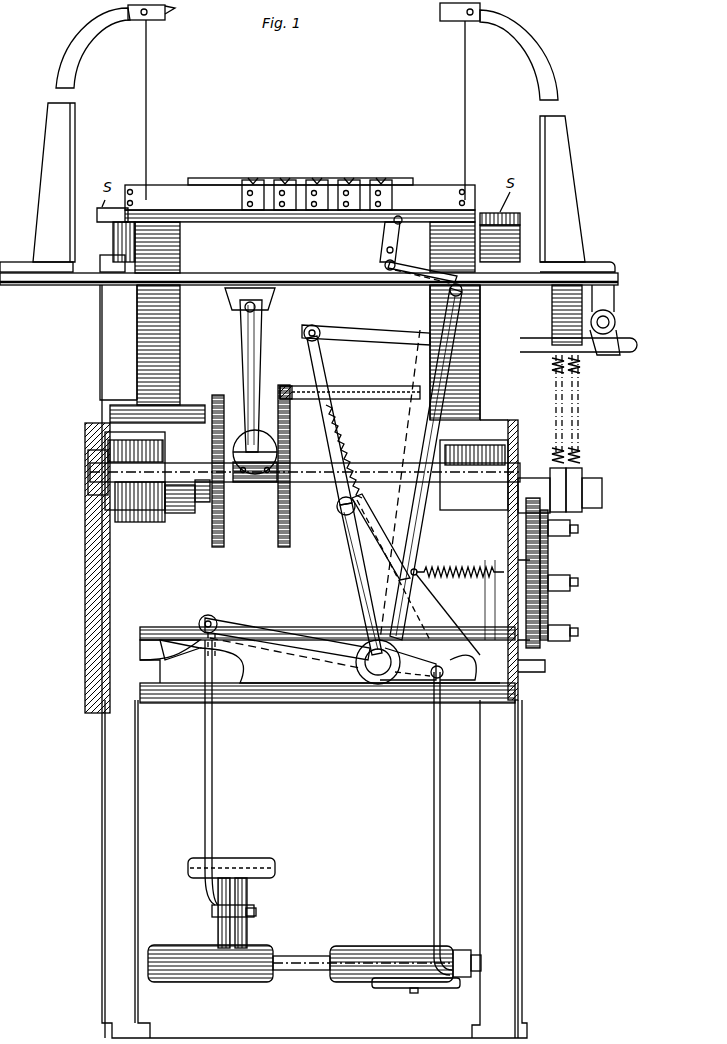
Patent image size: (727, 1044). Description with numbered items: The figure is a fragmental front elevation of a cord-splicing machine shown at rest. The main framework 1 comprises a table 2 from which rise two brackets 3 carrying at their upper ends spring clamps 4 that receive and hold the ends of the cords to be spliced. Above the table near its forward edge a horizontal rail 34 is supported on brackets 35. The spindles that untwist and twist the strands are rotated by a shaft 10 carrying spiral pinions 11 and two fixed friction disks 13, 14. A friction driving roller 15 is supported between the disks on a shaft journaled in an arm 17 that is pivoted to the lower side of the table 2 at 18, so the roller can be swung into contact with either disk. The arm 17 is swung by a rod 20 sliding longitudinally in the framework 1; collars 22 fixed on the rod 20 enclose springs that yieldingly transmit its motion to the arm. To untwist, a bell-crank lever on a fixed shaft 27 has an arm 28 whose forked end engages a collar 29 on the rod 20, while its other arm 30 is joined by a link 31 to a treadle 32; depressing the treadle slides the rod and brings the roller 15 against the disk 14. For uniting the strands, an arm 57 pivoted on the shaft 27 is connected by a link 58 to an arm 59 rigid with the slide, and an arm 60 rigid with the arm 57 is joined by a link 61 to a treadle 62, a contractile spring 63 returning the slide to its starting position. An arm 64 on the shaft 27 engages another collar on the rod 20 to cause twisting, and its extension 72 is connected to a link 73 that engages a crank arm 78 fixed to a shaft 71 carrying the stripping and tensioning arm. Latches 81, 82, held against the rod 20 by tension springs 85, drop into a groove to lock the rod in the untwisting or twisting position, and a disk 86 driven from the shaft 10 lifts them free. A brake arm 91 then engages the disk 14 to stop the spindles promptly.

The main framework 1 is at (108, 748).
The table 2 is at (68, 282).
The brackets 3 is at (50, 126).
The spring clamps 4 is at (160, 10).
The shaft 10 is at (192, 462).
The spiral pinions 11 is at (150, 462).
The friction disk 13 is at (222, 547).
The friction disk 14 is at (284, 547).
The friction driving roller 15 is at (246, 430).
The arm 17 is at (243, 360).
The pivot 18 is at (244, 307).
The rod 20 is at (180, 512).
The collars 22 is at (204, 505).
The fixed shaft 27 is at (372, 672).
The arm 28 is at (405, 545).
The collar 29 is at (390, 468).
The arm 30 is at (418, 652).
The link 31 is at (440, 812).
The treadle 32 is at (438, 988).
The horizontal rail 34 is at (218, 190).
The brackets 35 is at (115, 238).
The arm 57 is at (428, 372).
The link 58 is at (414, 266).
The arm 59 is at (380, 246).
The arm 60 is at (260, 622).
The link 61 is at (213, 782).
The treadle 62 is at (272, 860).
The contractile spring 63 is at (462, 568).
The arm 64 is at (358, 574).
The shaft 71 is at (614, 318).
The extension 72 is at (326, 372).
The link 73 is at (630, 352).
The crank arm 78 is at (620, 340).
The latch 81 is at (580, 480).
The latch 82 is at (552, 468).
The tension springs 85 is at (565, 416).
The disk 86 is at (548, 642).
The brake arm 91 is at (372, 392).